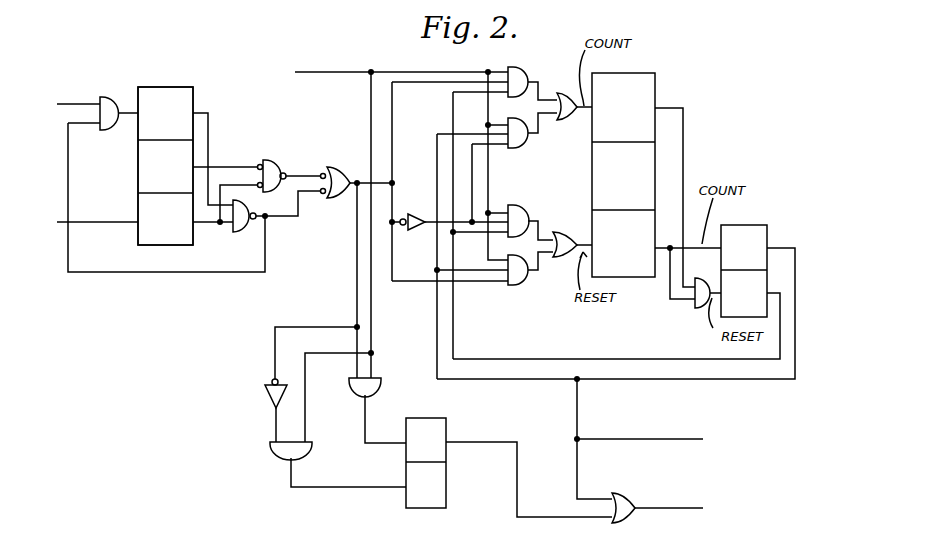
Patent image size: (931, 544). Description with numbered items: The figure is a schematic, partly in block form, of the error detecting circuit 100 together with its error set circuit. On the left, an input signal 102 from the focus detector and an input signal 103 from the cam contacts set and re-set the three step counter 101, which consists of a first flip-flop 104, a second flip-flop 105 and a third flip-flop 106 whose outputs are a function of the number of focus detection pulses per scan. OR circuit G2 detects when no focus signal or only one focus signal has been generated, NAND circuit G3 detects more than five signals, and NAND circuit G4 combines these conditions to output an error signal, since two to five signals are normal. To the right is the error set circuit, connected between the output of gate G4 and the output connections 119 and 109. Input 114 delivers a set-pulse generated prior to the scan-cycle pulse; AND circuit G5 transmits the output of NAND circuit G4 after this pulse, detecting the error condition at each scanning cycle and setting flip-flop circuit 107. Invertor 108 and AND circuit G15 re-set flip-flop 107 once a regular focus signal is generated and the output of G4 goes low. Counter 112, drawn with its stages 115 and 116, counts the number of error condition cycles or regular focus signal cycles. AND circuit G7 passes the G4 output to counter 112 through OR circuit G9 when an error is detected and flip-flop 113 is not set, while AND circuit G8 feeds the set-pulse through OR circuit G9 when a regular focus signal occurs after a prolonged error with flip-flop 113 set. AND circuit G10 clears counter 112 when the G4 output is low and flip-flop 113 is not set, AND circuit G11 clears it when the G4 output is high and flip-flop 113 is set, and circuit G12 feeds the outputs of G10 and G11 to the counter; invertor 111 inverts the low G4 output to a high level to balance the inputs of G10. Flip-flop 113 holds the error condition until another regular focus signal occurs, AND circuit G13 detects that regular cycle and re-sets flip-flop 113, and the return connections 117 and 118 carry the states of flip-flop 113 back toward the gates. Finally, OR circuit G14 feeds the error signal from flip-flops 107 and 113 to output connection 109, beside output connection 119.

The error detecting circuit 100 is at (160, 72).
The three step counter 101 is at (180, 87).
The input signal 102 is at (72, 102).
The input signal 103 is at (60, 225).
The first flip-flop 104 is at (165, 122).
The second flip-flop 105 is at (165, 175).
The third flip-flop 106 is at (166, 222).
The flip-flop circuit 107 is at (430, 418).
The invertor 108 is at (265, 392).
The output connection 109 is at (687, 507).
The invertor 111 is at (427, 198).
The counter 112 is at (638, 73).
The flip-flop 113 is at (750, 225).
The input 114 is at (312, 72).
The counter stage 115 is at (623, 120).
The counter stage 116 is at (623, 233).
The feedback line 117 is at (797, 382).
The feedback line 118 is at (653, 357).
The output connection 119 is at (658, 438).
The OR circuit G2 is at (275, 160).
The NAND circuit G3 is at (268, 220).
The NAND circuit G4 is at (348, 176).
The AND circuit G5 is at (382, 386).
The AND circuit G7 is at (517, 67).
The AND circuit G8 is at (512, 148).
The OR circuit G9 is at (571, 111).
The AND circuit G10 is at (516, 205).
The AND circuit G11 is at (516, 285).
The AND circuit G12 is at (570, 236).
The AND circuit G13 is at (706, 306).
The OR circuit G14 is at (618, 496).
The AND circuit G15 is at (275, 455).